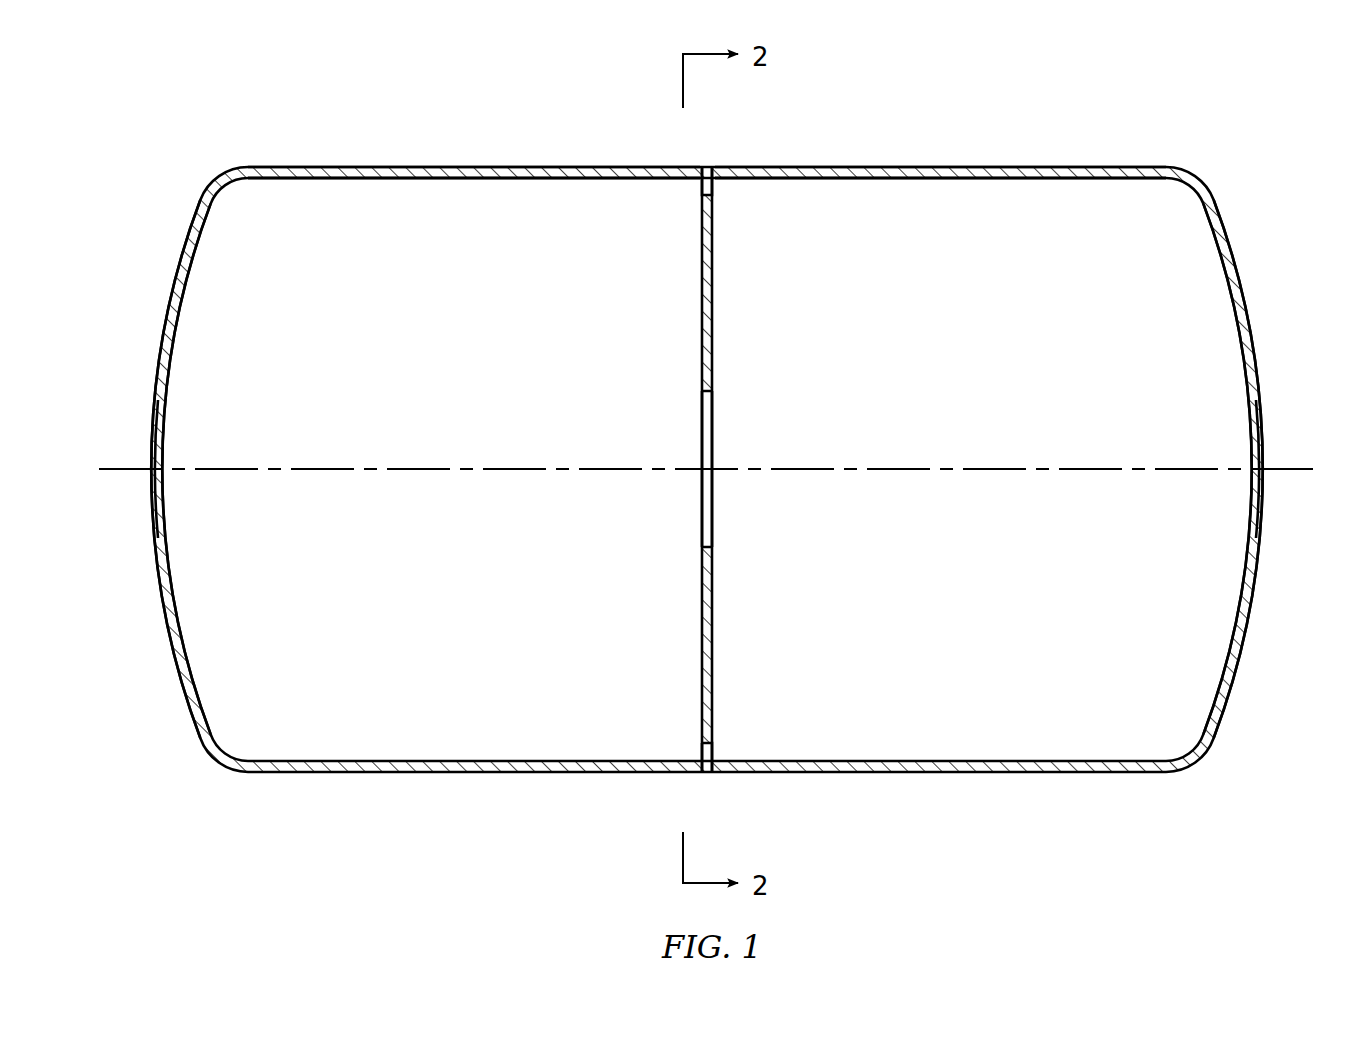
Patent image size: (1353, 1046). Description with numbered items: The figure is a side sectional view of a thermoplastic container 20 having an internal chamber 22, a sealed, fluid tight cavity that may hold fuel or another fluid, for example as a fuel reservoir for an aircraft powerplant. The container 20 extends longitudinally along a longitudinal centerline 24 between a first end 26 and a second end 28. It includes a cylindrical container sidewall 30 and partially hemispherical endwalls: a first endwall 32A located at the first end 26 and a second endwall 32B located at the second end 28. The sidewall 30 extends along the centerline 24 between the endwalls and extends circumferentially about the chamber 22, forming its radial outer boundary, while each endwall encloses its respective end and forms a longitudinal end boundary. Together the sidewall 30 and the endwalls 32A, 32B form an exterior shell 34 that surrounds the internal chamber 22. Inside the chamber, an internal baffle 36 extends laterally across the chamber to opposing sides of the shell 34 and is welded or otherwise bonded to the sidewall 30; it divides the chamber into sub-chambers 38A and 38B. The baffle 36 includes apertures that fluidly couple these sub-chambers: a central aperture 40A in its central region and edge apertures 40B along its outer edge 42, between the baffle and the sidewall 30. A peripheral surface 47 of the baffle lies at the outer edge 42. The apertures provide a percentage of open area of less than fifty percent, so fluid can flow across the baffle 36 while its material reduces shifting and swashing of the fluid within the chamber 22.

The thermoplastic container 20 is at (1206, 122).
The internal chamber 22 is at (584, 211).
The longitudinal centerline 24 is at (1309, 478).
The first end 26 is at (152, 478).
The second end 28 is at (1262, 460).
The container sidewall 30 is at (363, 167).
The first endwall 32A is at (158, 322).
The second endwall 32B is at (1250, 320).
The exterior shell 34 is at (1085, 159).
The internal baffle 36 is at (720, 304).
The first sub-chamber 38A is at (434, 342).
The second sub-chamber 38B is at (1016, 344).
The central aperture 40A is at (704, 430).
The edge aperture 40B is at (702, 192).
The outer edge 42 is at (708, 167).
The peripheral surface 47 is at (707, 469).